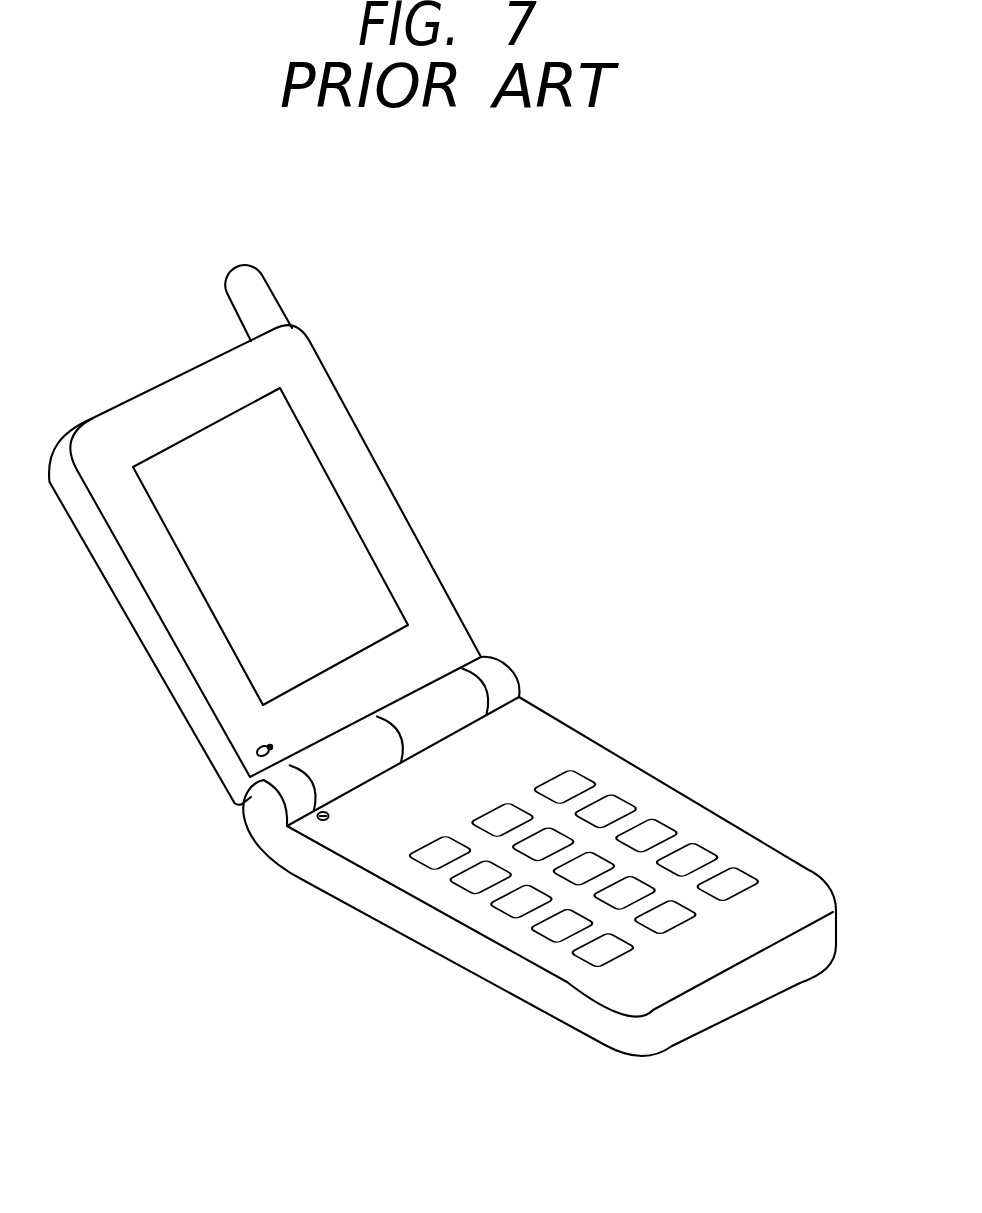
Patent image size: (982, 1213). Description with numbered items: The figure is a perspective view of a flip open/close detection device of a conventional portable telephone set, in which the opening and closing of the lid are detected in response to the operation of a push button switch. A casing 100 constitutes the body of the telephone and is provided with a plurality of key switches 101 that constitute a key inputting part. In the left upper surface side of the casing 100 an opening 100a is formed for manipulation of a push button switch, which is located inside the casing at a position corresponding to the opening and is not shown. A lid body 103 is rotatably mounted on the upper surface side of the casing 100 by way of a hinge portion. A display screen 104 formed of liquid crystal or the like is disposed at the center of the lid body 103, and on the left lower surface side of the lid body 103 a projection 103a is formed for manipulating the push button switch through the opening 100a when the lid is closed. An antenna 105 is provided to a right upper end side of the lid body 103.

The casing 100 is at (812, 864).
The opening 100a is at (320, 825).
The key switches 101 is at (577, 790).
The lid body 103 is at (438, 566).
The projection 103a is at (258, 749).
The display screen 104 is at (318, 493).
The antenna 105 is at (263, 312).